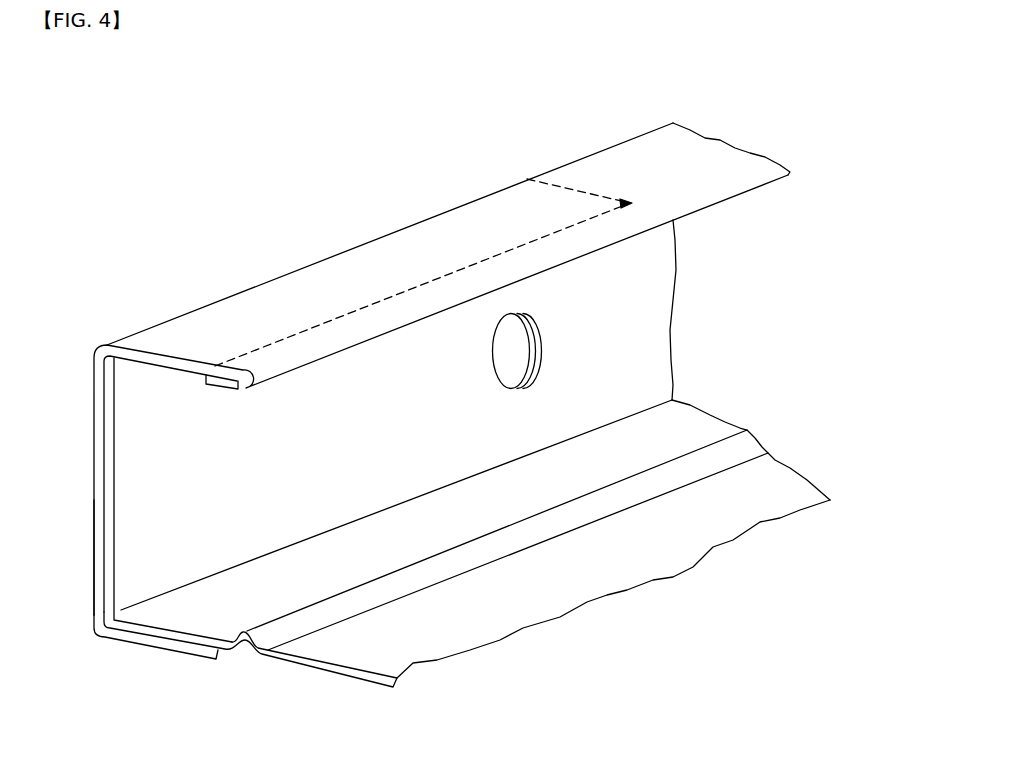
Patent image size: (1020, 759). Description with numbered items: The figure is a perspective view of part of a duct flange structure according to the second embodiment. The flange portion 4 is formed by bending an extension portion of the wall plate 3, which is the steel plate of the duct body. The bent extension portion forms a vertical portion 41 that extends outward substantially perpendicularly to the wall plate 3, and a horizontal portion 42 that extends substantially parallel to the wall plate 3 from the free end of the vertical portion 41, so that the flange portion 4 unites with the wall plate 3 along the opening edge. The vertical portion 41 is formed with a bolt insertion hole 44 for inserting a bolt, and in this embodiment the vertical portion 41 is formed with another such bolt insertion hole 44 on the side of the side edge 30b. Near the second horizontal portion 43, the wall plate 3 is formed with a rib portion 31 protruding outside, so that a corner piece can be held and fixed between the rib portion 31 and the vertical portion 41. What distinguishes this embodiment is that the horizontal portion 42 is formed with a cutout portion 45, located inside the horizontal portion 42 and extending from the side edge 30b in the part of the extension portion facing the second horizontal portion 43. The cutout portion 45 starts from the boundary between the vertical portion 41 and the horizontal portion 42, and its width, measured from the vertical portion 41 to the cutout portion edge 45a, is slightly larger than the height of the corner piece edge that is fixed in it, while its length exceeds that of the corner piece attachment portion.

The flange portion 4 is at (481, 167).
The horizontal portion 42 is at (640, 160).
The vertical portion 41 is at (93, 497).
The second horizontal portion 43 is at (178, 650).
The side edge 30b is at (222, 388).
The cutout portion 45 is at (338, 300).
The cutout portion edge 45a is at (548, 236).
The bolt insertion hole 44 is at (506, 383).
The wall plate 3 is at (590, 584).
The rib portion 31 is at (387, 586).